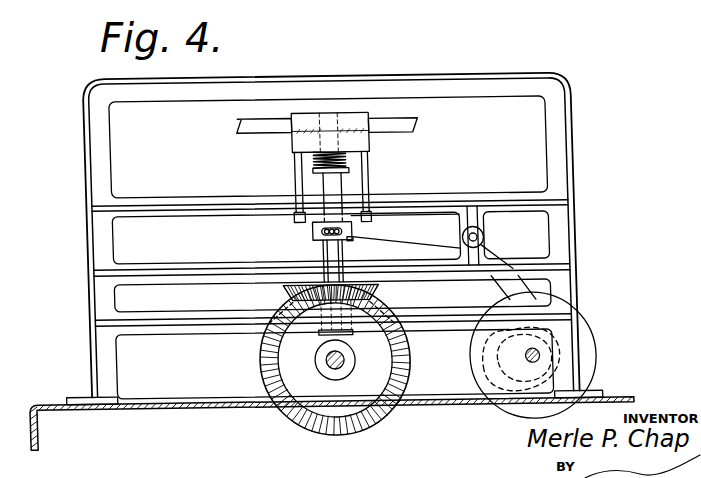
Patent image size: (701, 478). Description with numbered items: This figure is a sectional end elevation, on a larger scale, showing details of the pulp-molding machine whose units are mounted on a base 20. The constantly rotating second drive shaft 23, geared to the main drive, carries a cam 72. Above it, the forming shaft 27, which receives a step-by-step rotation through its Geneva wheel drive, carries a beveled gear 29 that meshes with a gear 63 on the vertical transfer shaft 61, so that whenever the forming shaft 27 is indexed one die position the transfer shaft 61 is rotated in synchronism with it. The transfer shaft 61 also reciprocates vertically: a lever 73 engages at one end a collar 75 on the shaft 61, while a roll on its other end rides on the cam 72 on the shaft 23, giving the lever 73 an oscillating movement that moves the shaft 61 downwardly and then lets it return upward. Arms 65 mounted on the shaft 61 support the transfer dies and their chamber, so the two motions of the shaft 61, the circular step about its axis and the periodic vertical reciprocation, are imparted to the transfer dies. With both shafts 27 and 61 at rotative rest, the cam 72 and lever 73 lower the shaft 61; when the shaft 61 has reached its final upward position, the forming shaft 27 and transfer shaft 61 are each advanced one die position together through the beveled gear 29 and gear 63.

The base 20 is at (41, 400).
The second drive shaft 23 is at (533, 358).
The shaft 27 is at (325, 365).
The beveled gear 29 is at (324, 432).
The vertical shaft 61 is at (340, 183).
The gear 63 is at (282, 291).
The arms 65 is at (396, 121).
The cam 72 is at (588, 328).
The lever 73 is at (428, 233).
The collar 75 is at (313, 230).